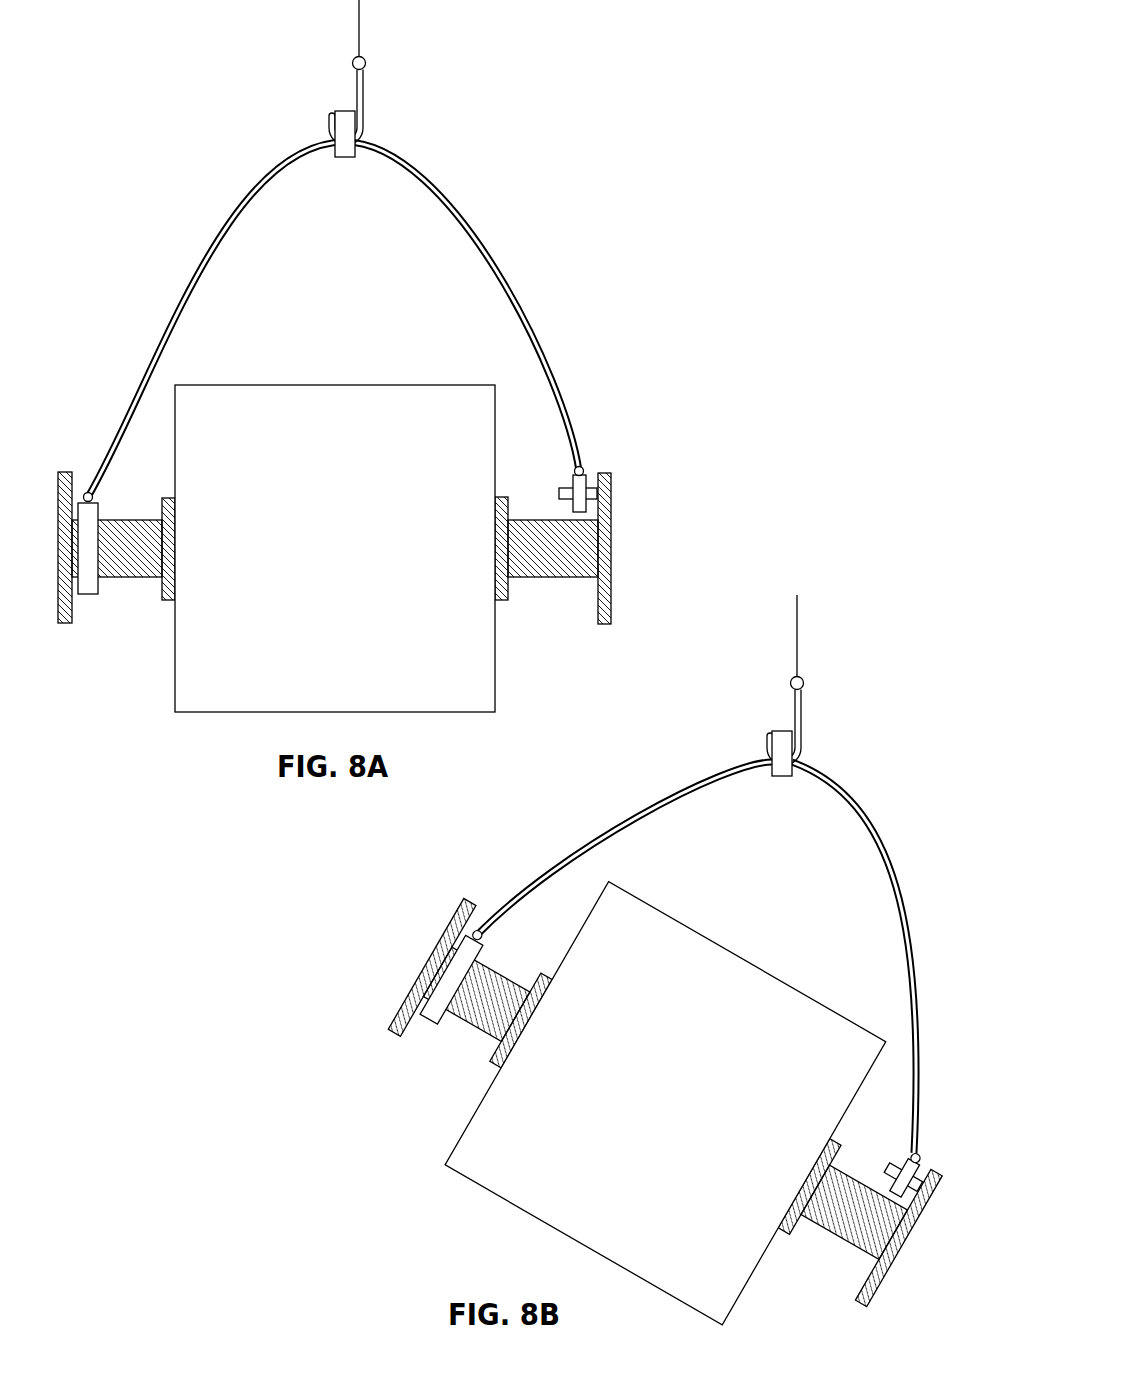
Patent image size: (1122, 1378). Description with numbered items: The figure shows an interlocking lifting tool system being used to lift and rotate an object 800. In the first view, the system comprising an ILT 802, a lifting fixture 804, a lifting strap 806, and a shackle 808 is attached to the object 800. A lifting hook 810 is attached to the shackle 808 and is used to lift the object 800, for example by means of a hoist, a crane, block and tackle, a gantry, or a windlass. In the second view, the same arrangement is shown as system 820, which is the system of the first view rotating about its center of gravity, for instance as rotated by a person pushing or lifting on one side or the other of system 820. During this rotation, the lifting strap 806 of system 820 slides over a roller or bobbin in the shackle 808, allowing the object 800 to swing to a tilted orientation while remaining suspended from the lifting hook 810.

In FIG. 8A, the object 800 is at (334, 385).
In FIG. 8A, the ILT 802 is at (88, 582).
In FIG. 8A, the lifting fixture 804 is at (585, 483).
In FIG. 8A, the lifting strap 806 is at (458, 212).
In FIG. 8A, the shackle 808 is at (337, 136).
In FIG. 8A, the lifting hook 810 is at (365, 97).
In FIG. 8B, the system 820 is at (432, 953).